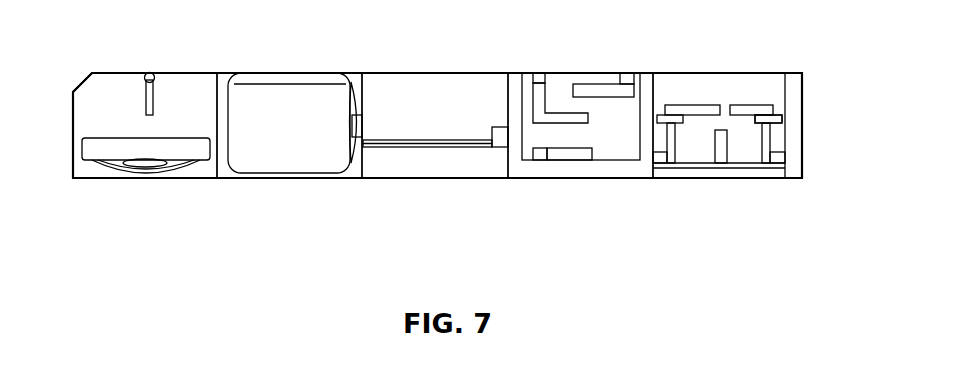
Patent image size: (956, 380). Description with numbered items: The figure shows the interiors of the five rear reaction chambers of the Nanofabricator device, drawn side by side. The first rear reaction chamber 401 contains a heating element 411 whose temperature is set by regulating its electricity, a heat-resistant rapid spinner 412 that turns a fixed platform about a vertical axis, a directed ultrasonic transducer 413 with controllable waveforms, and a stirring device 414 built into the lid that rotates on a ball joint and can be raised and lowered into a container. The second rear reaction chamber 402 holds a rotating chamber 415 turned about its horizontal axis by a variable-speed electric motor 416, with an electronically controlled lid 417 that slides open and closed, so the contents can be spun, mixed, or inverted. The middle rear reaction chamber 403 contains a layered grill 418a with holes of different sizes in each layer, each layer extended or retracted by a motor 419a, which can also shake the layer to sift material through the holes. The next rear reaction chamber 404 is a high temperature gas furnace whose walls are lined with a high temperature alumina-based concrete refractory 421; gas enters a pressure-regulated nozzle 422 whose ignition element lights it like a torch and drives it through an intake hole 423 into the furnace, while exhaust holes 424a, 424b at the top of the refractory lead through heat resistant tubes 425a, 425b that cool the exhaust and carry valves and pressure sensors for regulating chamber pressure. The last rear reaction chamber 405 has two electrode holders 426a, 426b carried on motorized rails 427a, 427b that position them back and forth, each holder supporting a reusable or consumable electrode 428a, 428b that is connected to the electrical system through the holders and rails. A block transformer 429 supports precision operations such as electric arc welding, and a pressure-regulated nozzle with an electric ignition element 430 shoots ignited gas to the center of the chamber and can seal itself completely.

The first rear reaction chamber 401 is at (200, 133).
The second rear reaction chamber 402 is at (308, 133).
The middle rear reaction chamber 403 is at (450, 121).
The high temperature gas furnace reaction chamber 404 is at (635, 131).
The electrode reaction chamber 405 is at (740, 97).
The heating element 411 is at (175, 168).
The heat-resistant rapid spinner 412 is at (107, 150).
The directed ultrasonic transducer 413 is at (80, 84).
The stirring device 414 is at (147, 74).
The rotating chamber 415 is at (288, 162).
The variable-speed electric motor 416 is at (353, 88).
The electronically controlled lid 417 is at (283, 80).
The layered grill 418a is at (390, 136).
The motor 419a is at (500, 140).
The high temperature alumina-based concrete refractory 421 is at (618, 172).
The pressure-regulated nozzle 422 is at (577, 155).
The intake hole 423 is at (541, 155).
The exhaust hole 424a is at (541, 78).
The exhaust hole 424b is at (628, 77).
The heat resistant tube 425a is at (537, 92).
The heat resistant tube 425b is at (600, 89).
The electrode holder 426a is at (664, 114).
The electrode holder 426b is at (777, 120).
The motorized rail 427a is at (670, 160).
The motorized rail 427b is at (768, 158).
The electrode 428a is at (683, 110).
The electrode 428b is at (753, 110).
The block transformer 429 is at (795, 132).
The pressure-regulated nozzle with electric ignition element 430 is at (723, 160).